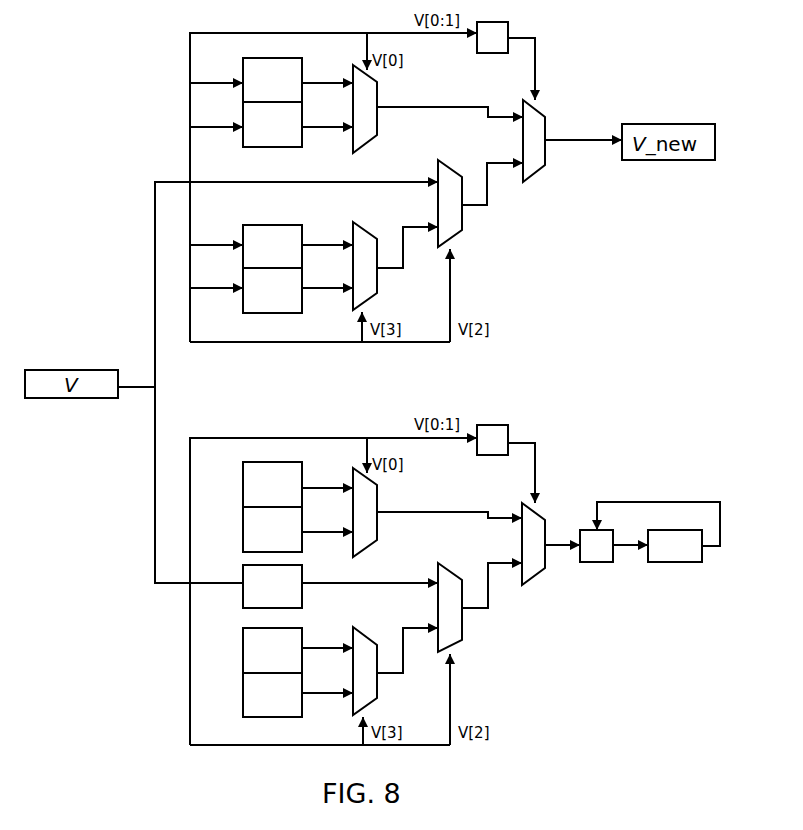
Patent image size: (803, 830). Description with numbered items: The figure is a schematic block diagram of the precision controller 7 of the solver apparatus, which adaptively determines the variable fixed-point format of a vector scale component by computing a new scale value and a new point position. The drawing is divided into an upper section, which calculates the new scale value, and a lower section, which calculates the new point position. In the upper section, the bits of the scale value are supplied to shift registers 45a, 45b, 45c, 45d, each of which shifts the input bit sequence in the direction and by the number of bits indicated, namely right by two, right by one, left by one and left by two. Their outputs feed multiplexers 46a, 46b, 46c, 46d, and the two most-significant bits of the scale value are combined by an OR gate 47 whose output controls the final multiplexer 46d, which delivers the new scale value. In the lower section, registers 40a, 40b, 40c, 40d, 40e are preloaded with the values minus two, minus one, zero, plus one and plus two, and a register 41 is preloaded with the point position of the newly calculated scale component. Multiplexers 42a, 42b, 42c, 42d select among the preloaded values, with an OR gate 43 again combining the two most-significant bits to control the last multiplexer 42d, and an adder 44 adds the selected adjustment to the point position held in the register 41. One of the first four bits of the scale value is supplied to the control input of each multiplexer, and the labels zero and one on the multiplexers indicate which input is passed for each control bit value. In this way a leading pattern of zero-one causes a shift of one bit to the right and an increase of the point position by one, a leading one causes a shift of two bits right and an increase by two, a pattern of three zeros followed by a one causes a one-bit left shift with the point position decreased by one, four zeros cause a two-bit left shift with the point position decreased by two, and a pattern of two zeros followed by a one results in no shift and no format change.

The precision controller 7 is at (113, 53).
The register 40a is at (243, 482).
The register 40b is at (243, 526).
The register 40c is at (243, 582).
The register 40d is at (243, 647).
The register 40e is at (243, 691).
The register 41 is at (680, 562).
The multiplexer 42a is at (370, 548).
The multiplexer 42b is at (368, 633).
The multiplexer 42c is at (444, 567).
The multiplexer 42d is at (540, 512).
The OR gate 43 is at (508, 433).
The adder 44 is at (600, 562).
The shift register 45a is at (302, 68).
The shift register 45b is at (302, 140).
The shift register 45c is at (302, 235).
The shift register 45d is at (302, 305).
The multiplexer 46a is at (370, 145).
The multiplexer 46b is at (368, 228).
The multiplexer 46c is at (444, 164).
The multiplexer 46d is at (540, 108).
The OR gate 47 is at (508, 30).